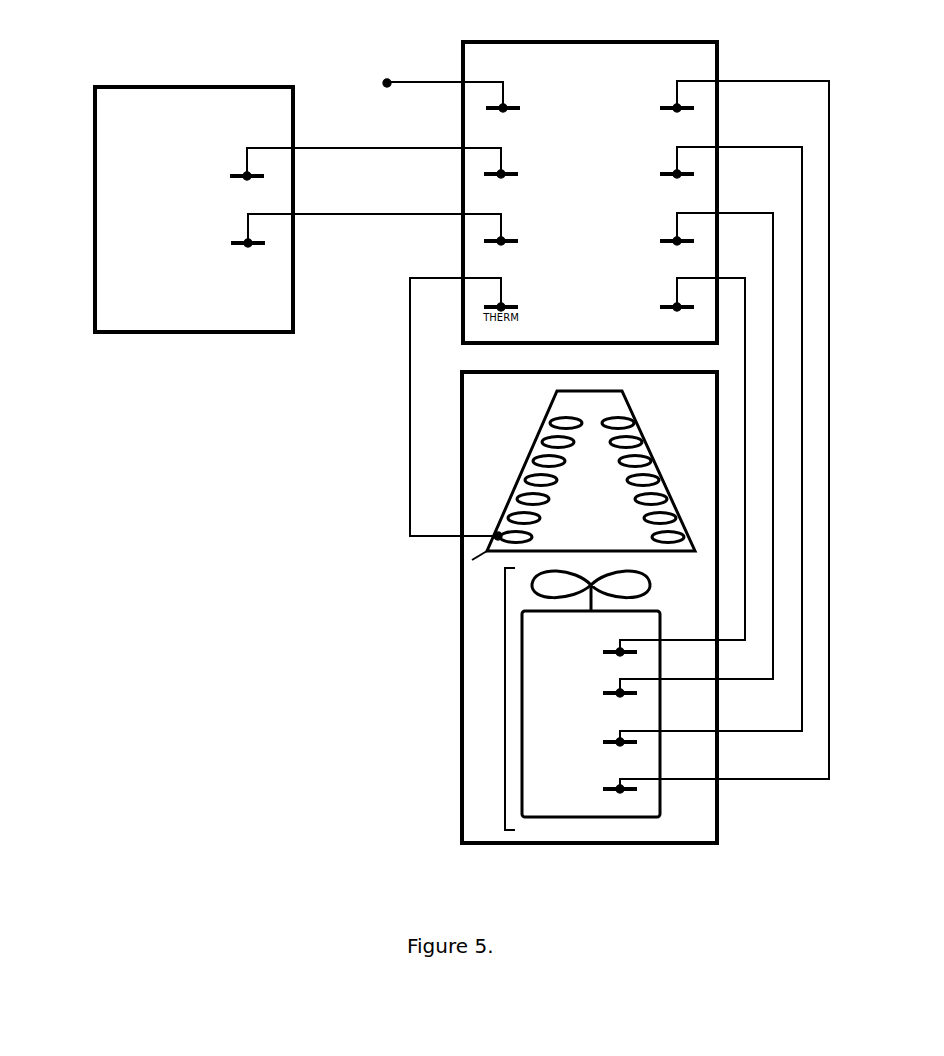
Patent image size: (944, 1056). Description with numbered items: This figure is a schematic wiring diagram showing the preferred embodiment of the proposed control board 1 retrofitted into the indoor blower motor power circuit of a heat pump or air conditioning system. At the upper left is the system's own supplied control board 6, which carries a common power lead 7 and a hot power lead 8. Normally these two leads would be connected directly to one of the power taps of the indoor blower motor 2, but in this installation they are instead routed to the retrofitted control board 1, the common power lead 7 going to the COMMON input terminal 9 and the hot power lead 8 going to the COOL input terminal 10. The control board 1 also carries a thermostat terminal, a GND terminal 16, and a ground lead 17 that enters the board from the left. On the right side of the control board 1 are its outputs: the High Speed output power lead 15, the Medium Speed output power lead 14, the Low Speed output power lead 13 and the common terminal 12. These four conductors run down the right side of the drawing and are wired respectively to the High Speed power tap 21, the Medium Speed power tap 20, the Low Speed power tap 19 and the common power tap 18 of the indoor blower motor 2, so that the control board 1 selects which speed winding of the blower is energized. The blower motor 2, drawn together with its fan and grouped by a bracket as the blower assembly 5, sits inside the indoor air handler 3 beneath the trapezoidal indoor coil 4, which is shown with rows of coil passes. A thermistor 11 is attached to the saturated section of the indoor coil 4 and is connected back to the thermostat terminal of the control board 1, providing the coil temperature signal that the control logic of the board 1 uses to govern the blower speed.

The control board 1 is at (705, 57).
The indoor blower motor 2 is at (647, 618).
The indoor air handler 3 is at (478, 389).
The indoor coil 4 is at (568, 418).
The fan assembly 5 is at (505, 702).
The system's supplied control board 6 is at (115, 148).
The common power lead 7 is at (247, 176).
The hot power lead 8 is at (248, 243).
The COMMON input terminal 9 is at (501, 174).
The COOL input terminal 10 is at (501, 241).
The thermistor 11 is at (472, 560).
The common terminal 12 is at (677, 108).
The Low Speed output power lead 13 is at (677, 174).
The Medium Speed output power lead 14 is at (677, 241).
The High Speed output power lead 15 is at (677, 307).
The GND terminal 16 is at (503, 108).
The ground wire junction 17 is at (387, 83).
The common power tap 18 is at (620, 789).
The Low Speed power tap 19 is at (620, 742).
The Medium Speed power tap 20 is at (620, 693).
The High Speed power tap 21 is at (620, 652).